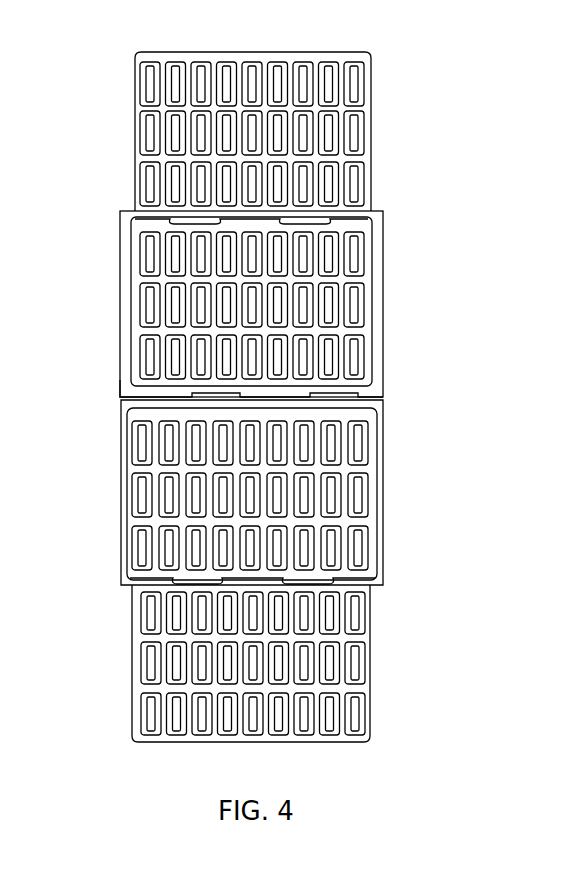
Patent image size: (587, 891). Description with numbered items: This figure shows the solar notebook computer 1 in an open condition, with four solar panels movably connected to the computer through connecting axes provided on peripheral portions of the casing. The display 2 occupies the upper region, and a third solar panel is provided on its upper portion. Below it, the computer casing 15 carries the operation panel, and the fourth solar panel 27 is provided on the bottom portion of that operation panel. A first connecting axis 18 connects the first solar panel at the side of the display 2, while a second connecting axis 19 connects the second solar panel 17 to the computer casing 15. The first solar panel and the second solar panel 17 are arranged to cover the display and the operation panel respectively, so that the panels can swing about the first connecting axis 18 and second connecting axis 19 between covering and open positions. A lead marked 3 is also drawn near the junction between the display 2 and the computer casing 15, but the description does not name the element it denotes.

The first battery pack / upper panel 1 is at (372, 69).
The second battery pack / middle panel 2 is at (385, 234).
The gap / junction between panels 3 is at (110, 385).
The frame 15 is at (385, 422).
The cell array 17 is at (373, 495).
The coupling tabs 18 is at (188, 217).
The lower coupling tabs 19 is at (185, 578).
The bottom panel 27 is at (367, 687).